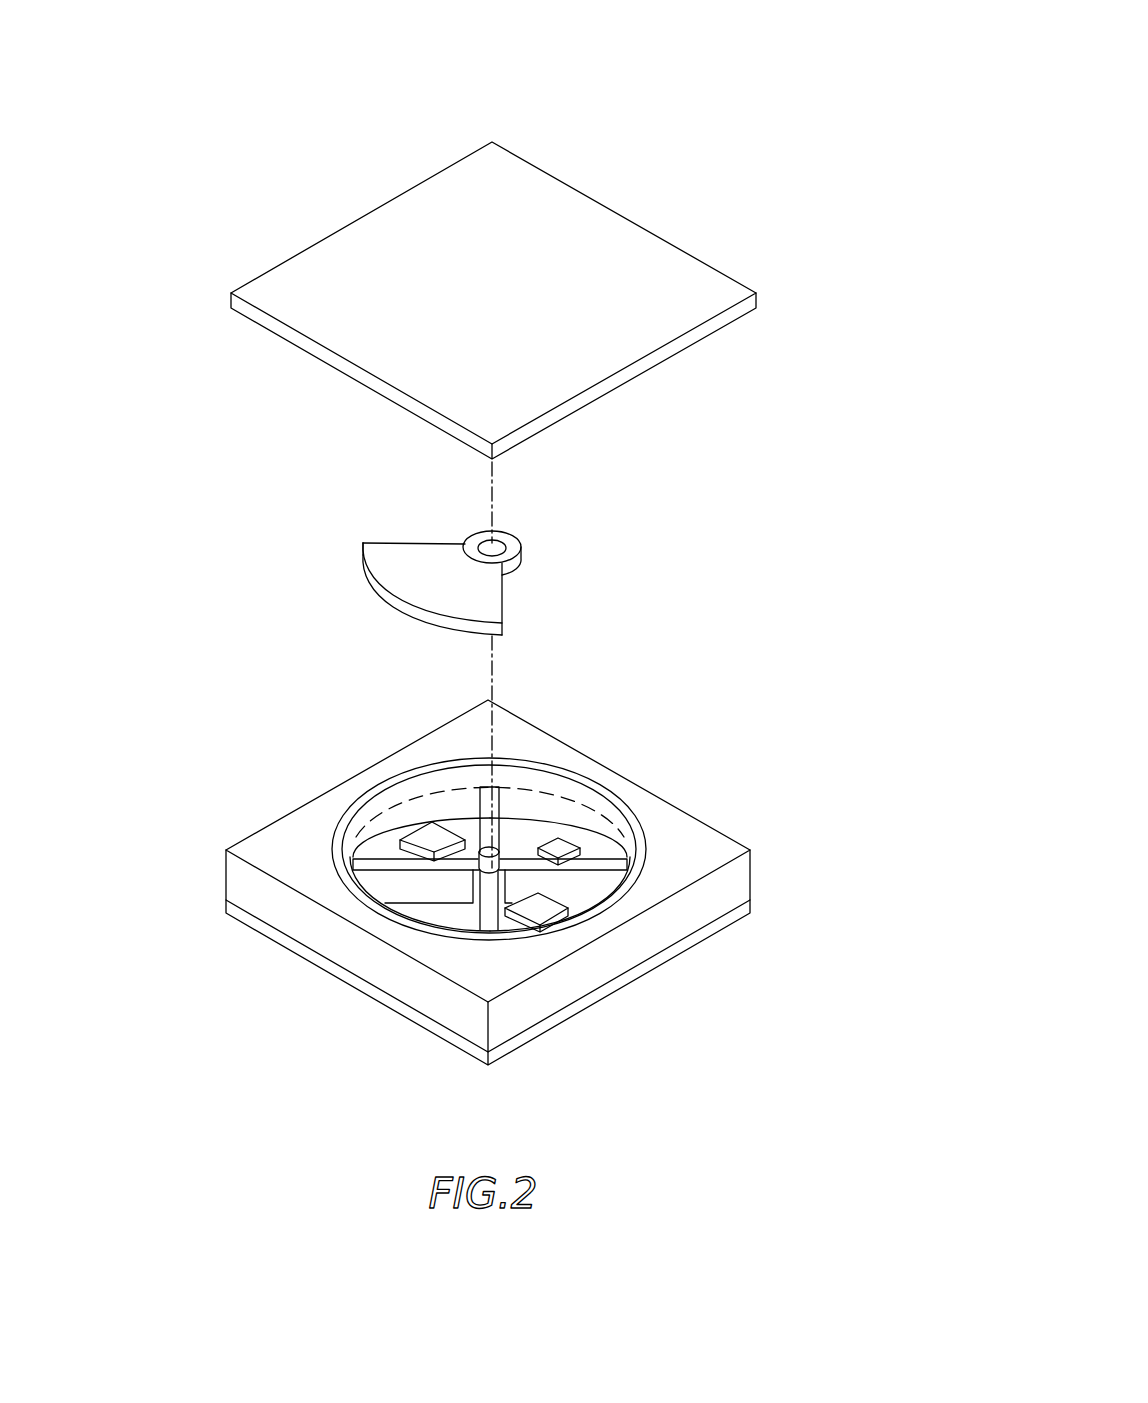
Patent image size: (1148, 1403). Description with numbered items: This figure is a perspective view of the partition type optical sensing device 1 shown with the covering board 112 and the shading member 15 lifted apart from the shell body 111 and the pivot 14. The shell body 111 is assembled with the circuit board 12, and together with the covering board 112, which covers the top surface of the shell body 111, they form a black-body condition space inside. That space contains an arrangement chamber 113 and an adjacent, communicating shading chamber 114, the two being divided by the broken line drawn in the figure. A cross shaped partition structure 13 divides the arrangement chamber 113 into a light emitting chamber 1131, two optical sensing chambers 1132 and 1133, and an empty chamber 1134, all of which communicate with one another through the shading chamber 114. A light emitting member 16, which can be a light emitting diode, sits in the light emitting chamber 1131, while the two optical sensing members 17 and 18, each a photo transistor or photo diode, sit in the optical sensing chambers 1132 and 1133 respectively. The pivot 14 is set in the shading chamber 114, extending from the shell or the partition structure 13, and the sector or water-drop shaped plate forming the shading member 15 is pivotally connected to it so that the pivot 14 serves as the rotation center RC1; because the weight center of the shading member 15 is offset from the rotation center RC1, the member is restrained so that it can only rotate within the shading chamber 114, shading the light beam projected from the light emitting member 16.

The optical sensing device 1 is at (768, 132).
The covering board 112 is at (305, 292).
The shading member 15 is at (544, 546).
The rotation center RC1 is at (493, 733).
The shading chamber 114 is at (543, 787).
The arrangement chamber 113 is at (313, 662).
The light emitting chamber 1131 is at (537, 812).
The optical sensing chamber 1132 is at (512, 895).
The optical sensing chamber 1133 is at (380, 842).
The empty chamber 1134 is at (428, 912).
The partition structure 13 is at (605, 848).
The pivot 14 is at (622, 885).
The light emitting member 16 is at (572, 845).
The optical sensing member 17 is at (548, 908).
The optical sensing member 18 is at (425, 838).
The shell body 111 is at (742, 882).
The circuit board 12 is at (650, 967).